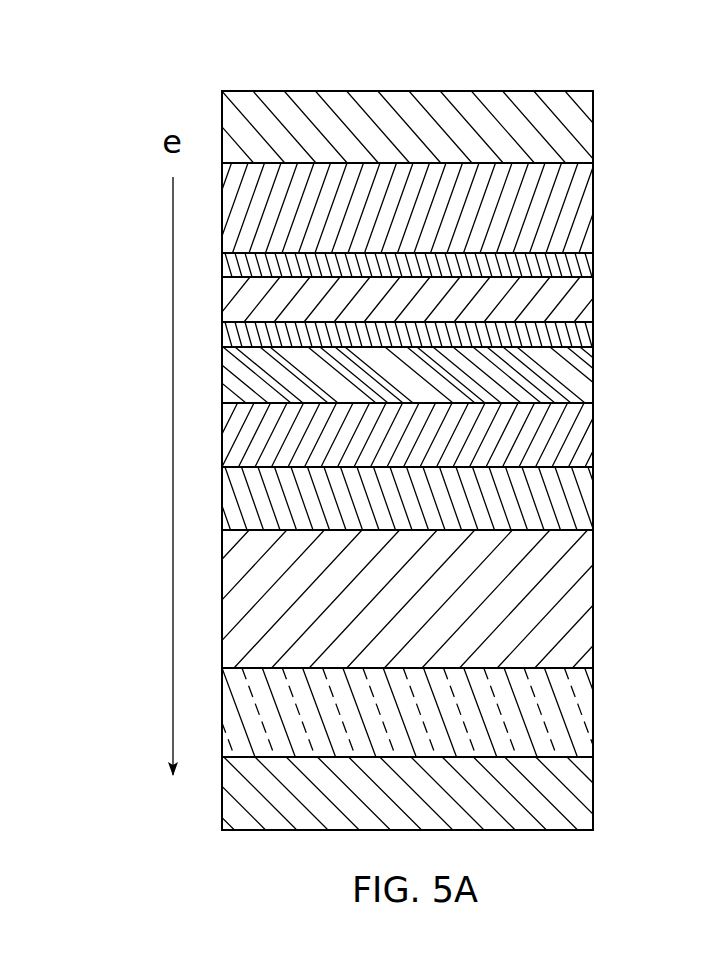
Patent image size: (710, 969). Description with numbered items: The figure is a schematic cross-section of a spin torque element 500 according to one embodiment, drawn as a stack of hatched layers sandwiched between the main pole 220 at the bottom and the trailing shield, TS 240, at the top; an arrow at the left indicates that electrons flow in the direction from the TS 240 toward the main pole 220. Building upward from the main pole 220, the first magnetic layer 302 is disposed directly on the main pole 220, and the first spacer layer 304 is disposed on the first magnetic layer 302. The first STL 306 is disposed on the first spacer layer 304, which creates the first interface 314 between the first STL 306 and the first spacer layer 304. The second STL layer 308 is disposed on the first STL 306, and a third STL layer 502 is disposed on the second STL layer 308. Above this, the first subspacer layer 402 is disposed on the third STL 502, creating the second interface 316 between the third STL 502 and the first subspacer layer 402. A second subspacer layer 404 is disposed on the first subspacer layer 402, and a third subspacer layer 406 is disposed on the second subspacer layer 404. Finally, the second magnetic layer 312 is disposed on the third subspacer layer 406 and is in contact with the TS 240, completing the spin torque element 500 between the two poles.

The spin torque element 500 is at (204, 52).
The TS 240 is at (390, 142).
The second magnetic layer 312 is at (390, 226).
The third subspacer layer 406 is at (584, 268).
The second subspacer layer 404 is at (390, 312).
The first subspacer layer 402 is at (585, 337).
The third STL layer 502 is at (390, 388).
The second STL layer 308 is at (390, 449).
The first STL 306 is at (390, 513).
The first spacer layer 304 is at (390, 612).
The first magnetic layer 302 is at (390, 729).
The main pole 220 is at (390, 806).
The second interface 316 is at (564, 351).
The first interface 314 is at (548, 529).